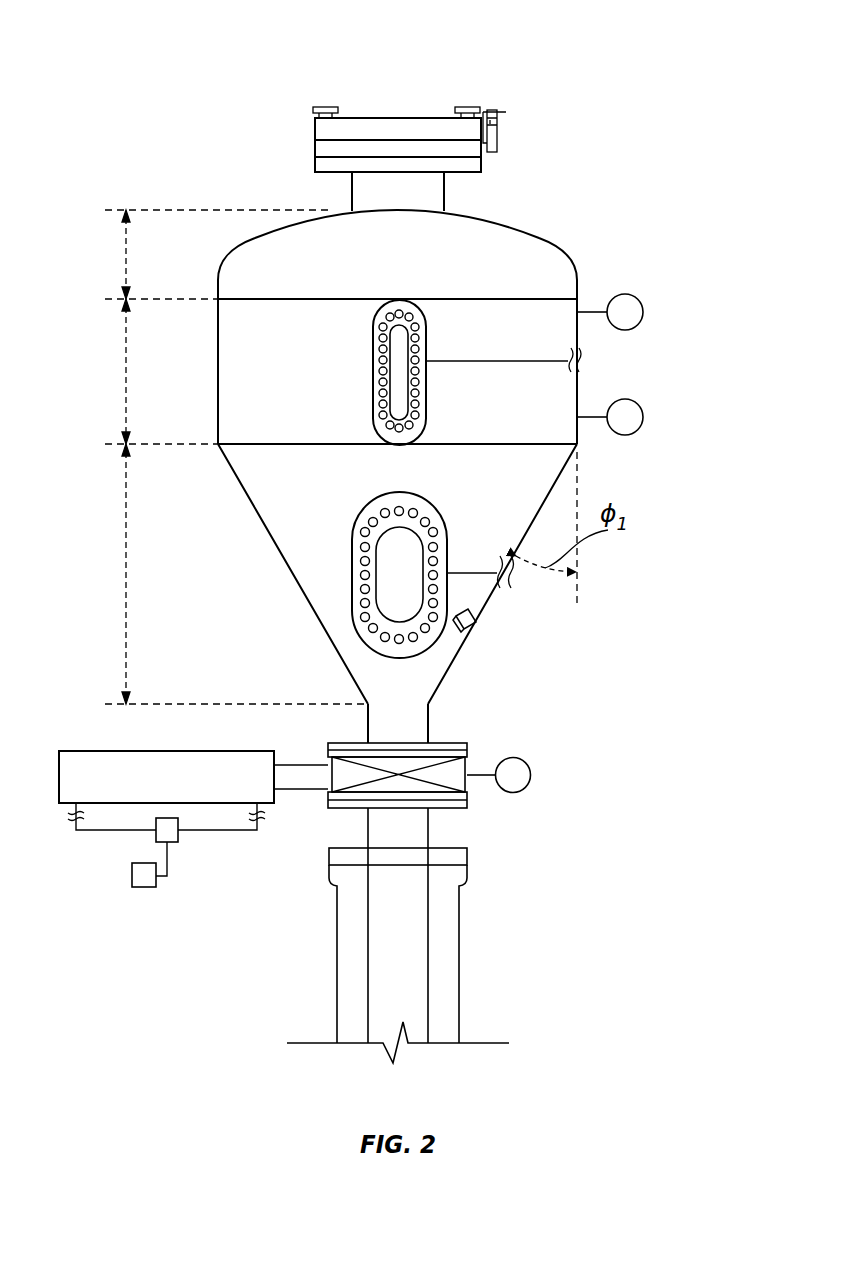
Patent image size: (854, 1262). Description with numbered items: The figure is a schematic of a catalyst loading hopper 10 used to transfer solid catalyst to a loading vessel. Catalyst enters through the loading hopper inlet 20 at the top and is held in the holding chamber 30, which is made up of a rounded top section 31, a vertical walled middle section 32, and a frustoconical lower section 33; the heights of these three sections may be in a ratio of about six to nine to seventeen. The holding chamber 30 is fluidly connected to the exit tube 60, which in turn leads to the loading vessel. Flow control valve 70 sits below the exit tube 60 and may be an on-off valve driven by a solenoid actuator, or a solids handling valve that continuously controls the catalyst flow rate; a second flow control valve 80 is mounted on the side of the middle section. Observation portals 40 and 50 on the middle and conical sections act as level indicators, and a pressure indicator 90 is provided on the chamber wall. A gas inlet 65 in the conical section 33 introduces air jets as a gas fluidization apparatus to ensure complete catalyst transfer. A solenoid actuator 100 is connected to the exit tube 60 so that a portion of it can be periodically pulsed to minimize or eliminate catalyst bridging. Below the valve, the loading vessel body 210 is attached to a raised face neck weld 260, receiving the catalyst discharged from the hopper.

The catalyst loading hopper 10 is at (131, 48).
The loading hopper inlet 20 is at (396, 118).
The holding chamber 30 is at (408, 266).
The top section 31 is at (126, 255).
The vertical walled middle section 32 is at (126, 370).
The frustoconical lower section 33 is at (126, 573).
The observation portal 40 is at (371, 342).
The observation portal 50 is at (371, 513).
The exit tube 60 is at (413, 738).
The gas inlet 65 is at (474, 628).
The flow control valve 70 is at (467, 765).
The flow control valve 80 is at (643, 310).
The pressure indicator 90 is at (643, 420).
The solenoid actuator 100 is at (193, 792).
The loading vessel body 210 is at (447, 922).
The raised face neck weld 260 is at (468, 863).